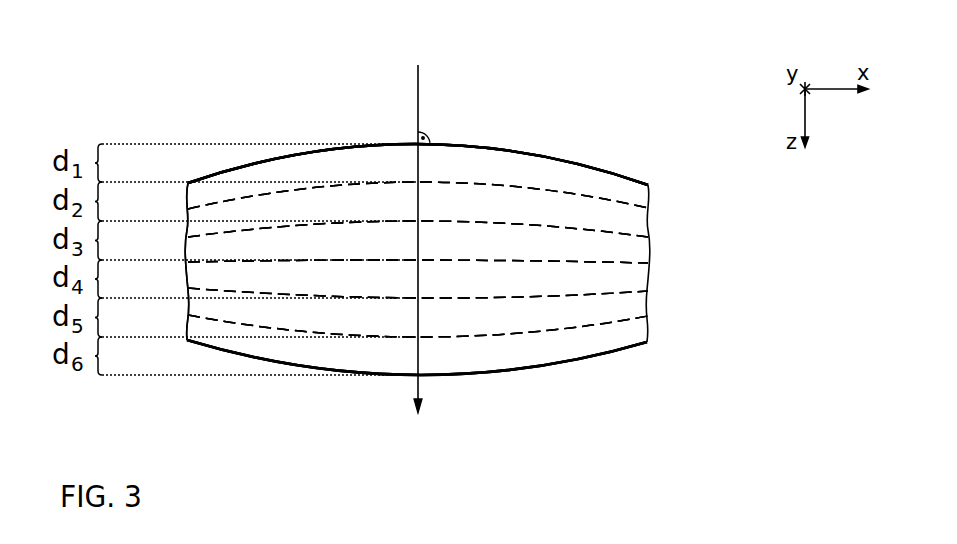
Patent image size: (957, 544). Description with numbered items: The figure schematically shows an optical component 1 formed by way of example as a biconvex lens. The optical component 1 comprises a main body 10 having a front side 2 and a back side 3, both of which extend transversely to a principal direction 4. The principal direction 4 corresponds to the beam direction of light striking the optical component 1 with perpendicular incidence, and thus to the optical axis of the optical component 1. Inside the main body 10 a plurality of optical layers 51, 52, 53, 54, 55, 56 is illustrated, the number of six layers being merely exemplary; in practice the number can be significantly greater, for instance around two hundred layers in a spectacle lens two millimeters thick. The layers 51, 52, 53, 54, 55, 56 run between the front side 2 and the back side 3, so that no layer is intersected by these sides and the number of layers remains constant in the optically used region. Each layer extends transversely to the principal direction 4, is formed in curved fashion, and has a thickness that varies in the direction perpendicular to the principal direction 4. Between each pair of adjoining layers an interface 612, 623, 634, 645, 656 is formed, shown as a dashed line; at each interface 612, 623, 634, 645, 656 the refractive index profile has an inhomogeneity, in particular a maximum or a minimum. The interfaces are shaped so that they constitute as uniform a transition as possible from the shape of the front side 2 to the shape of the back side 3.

The optical component 1 is at (326, 97).
The main body 10 is at (260, 159).
The front side 2 is at (515, 150).
The back side 3 is at (542, 367).
The principal direction 4 is at (418, 100).
The first optical layer 51 is at (222, 196).
The second optical layer 52 is at (279, 209).
The third optical layer 53 is at (347, 246).
The fourth optical layer 54 is at (389, 287).
The fifth optical layer 55 is at (458, 322).
The sixth optical layer 56 is at (580, 343).
The interface between first and second layers 612 is at (612, 203).
The interface between second and third layers 623 is at (613, 233).
The interface between third and fourth layers 634 is at (613, 262).
The interface between fourth and fifth layers 645 is at (613, 292).
The interface between fifth and sixth layers 656 is at (613, 321).